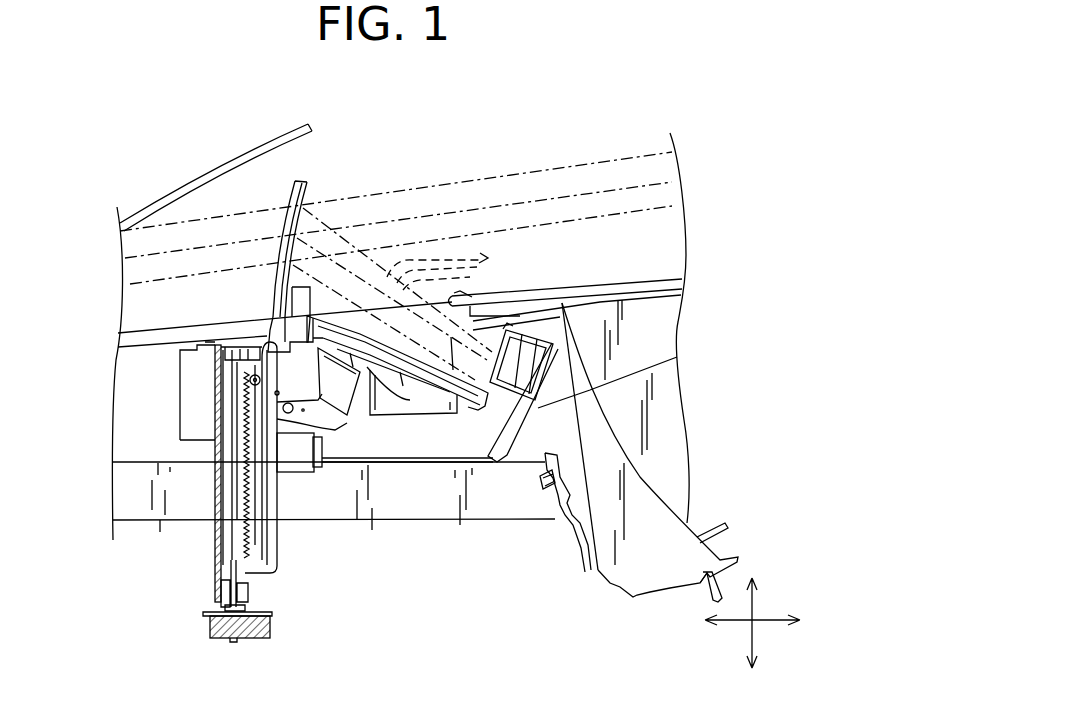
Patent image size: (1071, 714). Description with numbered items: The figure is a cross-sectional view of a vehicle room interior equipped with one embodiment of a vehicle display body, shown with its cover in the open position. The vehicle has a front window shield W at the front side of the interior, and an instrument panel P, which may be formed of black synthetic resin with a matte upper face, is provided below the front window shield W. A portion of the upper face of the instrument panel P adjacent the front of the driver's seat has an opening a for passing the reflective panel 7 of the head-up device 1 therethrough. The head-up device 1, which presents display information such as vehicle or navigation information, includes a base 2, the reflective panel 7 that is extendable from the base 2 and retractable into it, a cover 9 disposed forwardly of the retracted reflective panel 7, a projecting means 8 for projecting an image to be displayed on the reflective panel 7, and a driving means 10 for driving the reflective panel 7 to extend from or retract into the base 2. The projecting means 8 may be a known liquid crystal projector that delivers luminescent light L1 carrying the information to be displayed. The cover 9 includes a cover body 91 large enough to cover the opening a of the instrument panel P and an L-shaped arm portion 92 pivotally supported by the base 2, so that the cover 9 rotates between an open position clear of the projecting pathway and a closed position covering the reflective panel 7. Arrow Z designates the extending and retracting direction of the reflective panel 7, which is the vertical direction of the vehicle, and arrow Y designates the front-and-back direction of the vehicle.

The head-up device 1 is at (343, 138).
The base 2 is at (210, 557).
The reflective panel 7 is at (312, 183).
The projecting means 8 is at (540, 418).
The cover 9 is at (432, 395).
The cover body 91 is at (420, 382).
The arm portion 92 is at (348, 420).
The driving means 10 is at (210, 628).
The front window shield W is at (190, 182).
The instrument panel P is at (580, 290).
The opening a is at (460, 292).
The luminescent light L1 is at (405, 294).
The arrow Z is at (754, 597).
The arrow Y is at (770, 625).